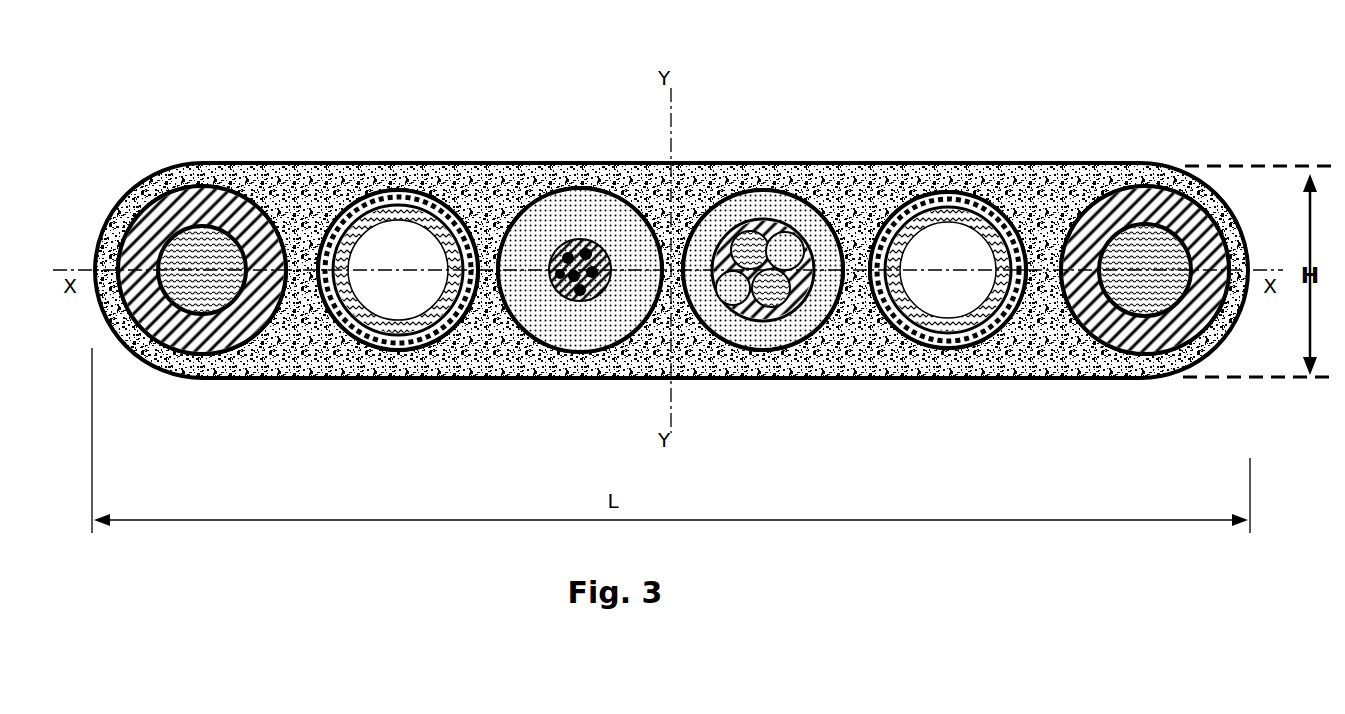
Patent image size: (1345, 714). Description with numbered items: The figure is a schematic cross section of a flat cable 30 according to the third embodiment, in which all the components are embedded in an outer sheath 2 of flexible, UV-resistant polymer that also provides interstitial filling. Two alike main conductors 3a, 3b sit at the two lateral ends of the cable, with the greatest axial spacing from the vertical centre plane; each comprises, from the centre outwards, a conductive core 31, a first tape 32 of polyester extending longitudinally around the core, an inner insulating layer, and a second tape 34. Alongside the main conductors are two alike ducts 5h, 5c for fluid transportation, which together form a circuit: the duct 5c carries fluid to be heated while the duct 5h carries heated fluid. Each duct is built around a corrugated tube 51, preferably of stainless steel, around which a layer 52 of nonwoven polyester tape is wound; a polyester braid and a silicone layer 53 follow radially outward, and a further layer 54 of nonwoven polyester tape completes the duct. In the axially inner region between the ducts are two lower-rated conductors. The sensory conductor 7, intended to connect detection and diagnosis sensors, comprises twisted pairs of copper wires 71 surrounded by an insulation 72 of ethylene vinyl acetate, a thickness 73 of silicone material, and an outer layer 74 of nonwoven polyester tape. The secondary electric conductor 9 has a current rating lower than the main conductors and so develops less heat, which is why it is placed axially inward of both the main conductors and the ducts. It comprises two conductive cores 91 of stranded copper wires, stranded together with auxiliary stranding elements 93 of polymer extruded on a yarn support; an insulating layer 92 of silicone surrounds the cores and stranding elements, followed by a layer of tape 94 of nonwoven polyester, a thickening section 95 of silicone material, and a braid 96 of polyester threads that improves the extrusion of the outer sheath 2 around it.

The cable 30 is at (212, 126).
The outer sheath 2 is at (1035, 340).
The main conductor 3a is at (160, 155).
The main conductor 3b is at (1164, 178).
The conductive core 31 is at (163, 303).
The first tape 32 is at (217, 303).
The second tape 34 is at (170, 372).
The duct 5h is at (442, 155).
The duct 5c is at (948, 176).
The corrugated tube 51 is at (360, 155).
The layer of nonwoven tape 52 is at (410, 370).
The silicone layer 53 is at (420, 155).
The further layer of nonwoven polyester tape 54 is at (333, 370).
The sensory conductor 7 is at (544, 352).
The pairs of copper wires 71 is at (597, 240).
The insulation 72 is at (550, 232).
The thickness 73 is at (588, 340).
The layer of nonwoven polyester tape 74 is at (562, 180).
The secondary electric conductor 9 is at (795, 178).
The conductive cores 91 is at (736, 332).
The insulating layer 92 is at (750, 210).
The auxiliary stranding elements 93 is at (719, 298).
The layer of tape 94 is at (735, 225).
The thickening section 95 is at (790, 318).
The braid 96 is at (815, 320).